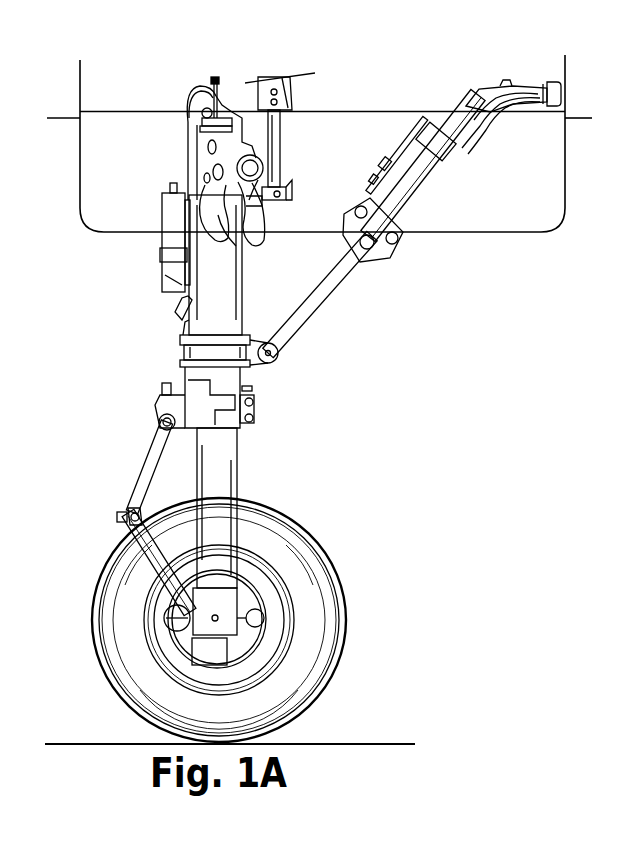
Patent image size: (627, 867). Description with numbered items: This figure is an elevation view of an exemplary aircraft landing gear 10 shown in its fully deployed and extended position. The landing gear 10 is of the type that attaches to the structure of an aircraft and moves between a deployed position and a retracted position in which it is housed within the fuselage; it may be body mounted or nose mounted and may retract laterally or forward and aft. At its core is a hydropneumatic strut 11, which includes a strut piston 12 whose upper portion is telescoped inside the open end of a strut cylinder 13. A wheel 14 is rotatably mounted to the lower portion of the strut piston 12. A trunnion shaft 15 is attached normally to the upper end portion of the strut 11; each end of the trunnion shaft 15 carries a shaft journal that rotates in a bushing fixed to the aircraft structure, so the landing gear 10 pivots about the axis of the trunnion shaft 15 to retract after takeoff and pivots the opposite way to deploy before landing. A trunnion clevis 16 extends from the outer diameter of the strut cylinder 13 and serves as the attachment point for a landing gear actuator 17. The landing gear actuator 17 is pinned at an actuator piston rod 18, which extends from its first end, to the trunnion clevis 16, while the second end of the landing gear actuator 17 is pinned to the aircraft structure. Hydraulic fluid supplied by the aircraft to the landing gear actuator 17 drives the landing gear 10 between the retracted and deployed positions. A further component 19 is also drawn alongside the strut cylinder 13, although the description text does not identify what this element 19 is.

The aircraft landing gear 10 is at (170, 70).
The strut 11 is at (150, 353).
The strut piston 12 is at (157, 467).
The strut cylinder 13 is at (167, 288).
The wheel 14 is at (95, 572).
The trunnion shaft 15 is at (183, 92).
The trunnion clevis 16 is at (240, 220).
The landing gear actuator 17 is at (304, 102).
The actuator piston rod 18 is at (282, 144).
The sensor unit 19 is at (164, 220).